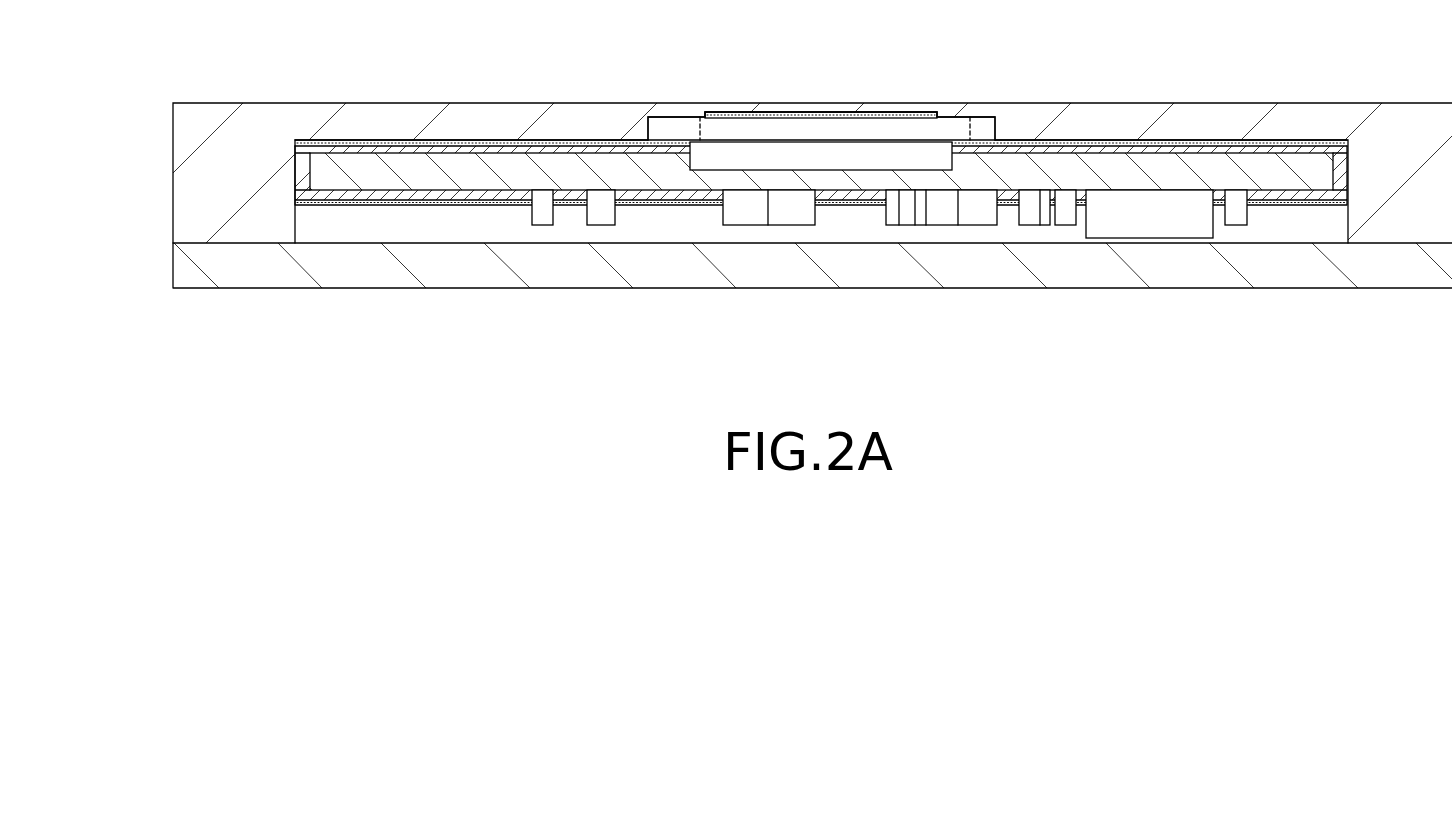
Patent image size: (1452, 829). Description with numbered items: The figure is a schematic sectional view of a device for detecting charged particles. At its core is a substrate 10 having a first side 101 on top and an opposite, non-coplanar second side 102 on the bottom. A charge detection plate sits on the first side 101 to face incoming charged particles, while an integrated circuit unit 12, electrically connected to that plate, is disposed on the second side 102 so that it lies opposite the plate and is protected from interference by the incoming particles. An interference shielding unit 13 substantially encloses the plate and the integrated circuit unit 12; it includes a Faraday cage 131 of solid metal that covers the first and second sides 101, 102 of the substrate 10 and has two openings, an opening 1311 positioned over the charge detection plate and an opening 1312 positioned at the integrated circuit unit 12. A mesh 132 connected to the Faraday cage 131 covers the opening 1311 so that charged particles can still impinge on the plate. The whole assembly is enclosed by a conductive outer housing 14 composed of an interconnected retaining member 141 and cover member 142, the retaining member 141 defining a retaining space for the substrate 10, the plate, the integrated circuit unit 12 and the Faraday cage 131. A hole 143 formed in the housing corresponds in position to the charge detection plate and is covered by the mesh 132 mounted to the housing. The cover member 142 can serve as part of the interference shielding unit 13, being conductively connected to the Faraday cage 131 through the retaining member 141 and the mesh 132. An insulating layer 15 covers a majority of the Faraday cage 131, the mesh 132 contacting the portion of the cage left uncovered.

The substrate 10 is at (837, 199).
The first side 101 is at (470, 155).
The second side 102 is at (498, 188).
The integrated circuit unit 12 is at (1167, 213).
The interference shielding unit 13 is at (763, 191).
The Faraday cage 131 is at (813, 100).
The opening 1311 is at (692, 148).
The opening 1312 is at (533, 195).
The mesh 132 is at (785, 113).
The conductive outer housing 14 is at (726, 199).
The retaining member 141 is at (223, 158).
The cover member 142 is at (872, 263).
The hole 143 is at (1000, 137).
The insulating layer 15 is at (323, 138).